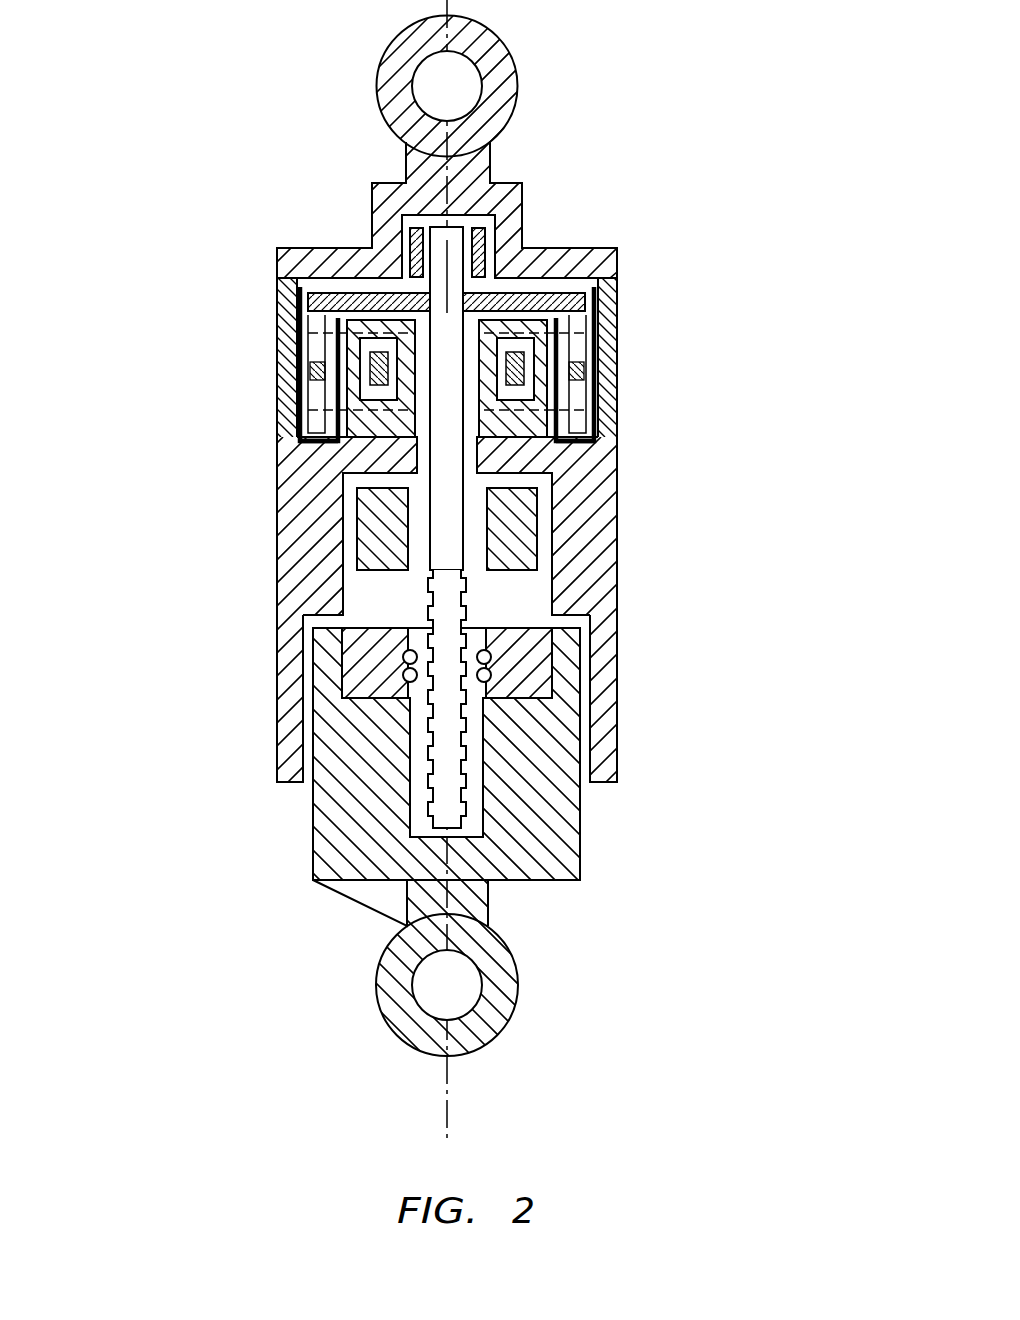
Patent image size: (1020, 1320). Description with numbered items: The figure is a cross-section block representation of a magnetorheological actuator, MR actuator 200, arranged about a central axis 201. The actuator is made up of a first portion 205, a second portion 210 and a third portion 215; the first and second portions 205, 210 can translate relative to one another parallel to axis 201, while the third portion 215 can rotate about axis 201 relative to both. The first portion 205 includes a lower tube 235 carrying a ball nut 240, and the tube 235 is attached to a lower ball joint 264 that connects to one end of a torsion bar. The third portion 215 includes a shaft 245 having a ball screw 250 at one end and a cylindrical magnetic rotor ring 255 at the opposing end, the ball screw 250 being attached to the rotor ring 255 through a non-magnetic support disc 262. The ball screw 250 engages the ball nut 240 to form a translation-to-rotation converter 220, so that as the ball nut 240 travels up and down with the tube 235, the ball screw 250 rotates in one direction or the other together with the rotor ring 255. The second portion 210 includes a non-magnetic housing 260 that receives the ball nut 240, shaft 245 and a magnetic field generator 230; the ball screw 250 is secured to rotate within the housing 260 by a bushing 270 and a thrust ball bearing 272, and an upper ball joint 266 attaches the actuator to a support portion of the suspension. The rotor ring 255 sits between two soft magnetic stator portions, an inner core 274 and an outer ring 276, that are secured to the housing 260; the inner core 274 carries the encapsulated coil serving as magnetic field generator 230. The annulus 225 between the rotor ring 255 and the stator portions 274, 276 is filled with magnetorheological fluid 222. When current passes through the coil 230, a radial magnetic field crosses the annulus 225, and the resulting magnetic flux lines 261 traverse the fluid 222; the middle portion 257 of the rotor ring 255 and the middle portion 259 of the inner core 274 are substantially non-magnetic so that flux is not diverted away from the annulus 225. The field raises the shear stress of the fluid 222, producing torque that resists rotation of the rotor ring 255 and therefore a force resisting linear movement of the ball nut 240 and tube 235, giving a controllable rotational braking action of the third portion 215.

The MR actuator 200 is at (825, 70).
The axis 201 is at (449, 1108).
The first portion 205 is at (584, 850).
The second portion 210 is at (622, 498).
The third portion 215 is at (472, 590).
The translation-to-rotation converter 220 is at (489, 725).
The magnetorheological fluid 222 is at (580, 337).
The annulus 225 is at (560, 445).
The magnetic field generator 230 is at (540, 385).
The tube 235 is at (358, 808).
The ball nut 240 is at (375, 700).
The shaft 245 is at (380, 455).
The ball screw 250 is at (425, 628).
The magnetic rotor ring 255 is at (300, 350).
The middle portion of the rotor ring 257 is at (310, 340).
The middle portion of cylinder 259 is at (618, 312).
The housing 260 is at (290, 530).
The magnetic flux lines 261 is at (362, 335).
The support disc 262 is at (520, 295).
The lower ball joint 264 is at (519, 987).
The upper ball joint 266 is at (518, 92).
The bushing 270 is at (410, 232).
The thrust ball bearing 272 is at (530, 540).
The inner core 274 is at (333, 408).
The outer ring 276 is at (298, 385).